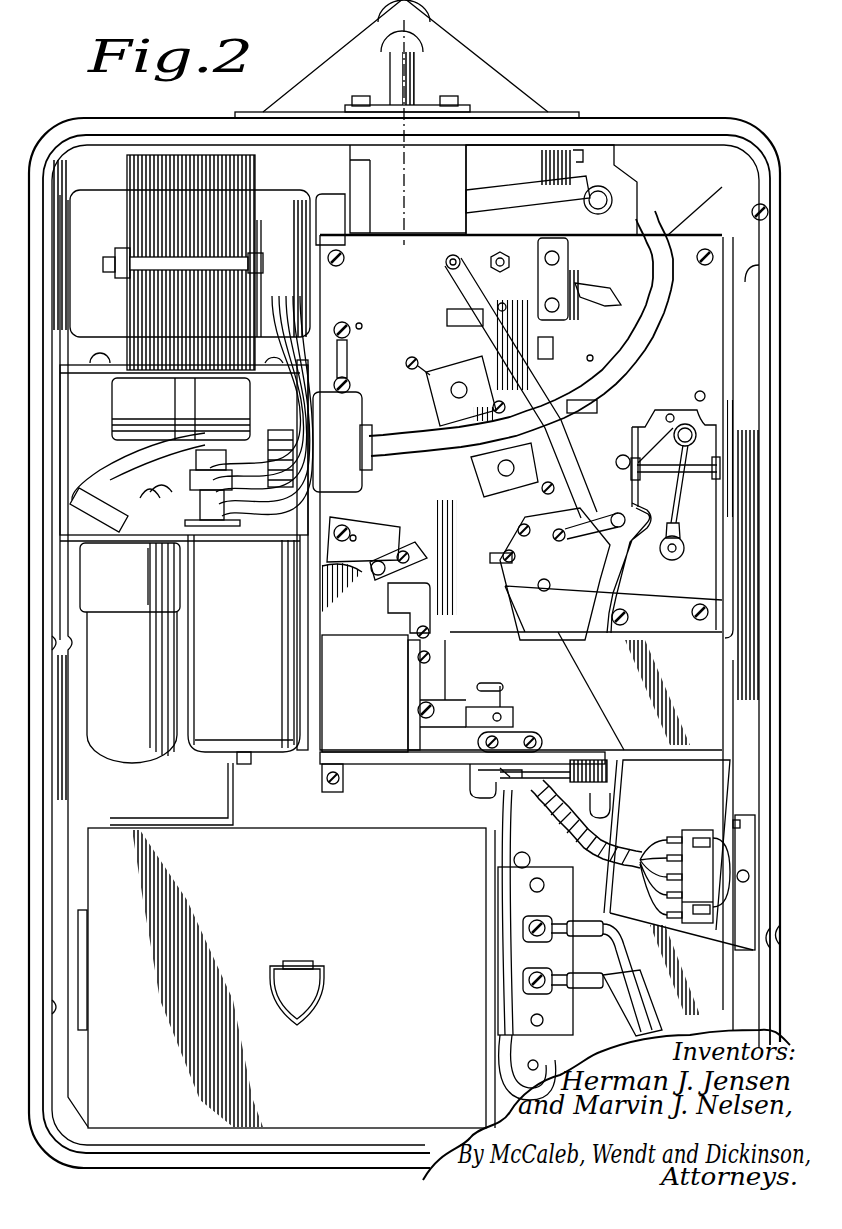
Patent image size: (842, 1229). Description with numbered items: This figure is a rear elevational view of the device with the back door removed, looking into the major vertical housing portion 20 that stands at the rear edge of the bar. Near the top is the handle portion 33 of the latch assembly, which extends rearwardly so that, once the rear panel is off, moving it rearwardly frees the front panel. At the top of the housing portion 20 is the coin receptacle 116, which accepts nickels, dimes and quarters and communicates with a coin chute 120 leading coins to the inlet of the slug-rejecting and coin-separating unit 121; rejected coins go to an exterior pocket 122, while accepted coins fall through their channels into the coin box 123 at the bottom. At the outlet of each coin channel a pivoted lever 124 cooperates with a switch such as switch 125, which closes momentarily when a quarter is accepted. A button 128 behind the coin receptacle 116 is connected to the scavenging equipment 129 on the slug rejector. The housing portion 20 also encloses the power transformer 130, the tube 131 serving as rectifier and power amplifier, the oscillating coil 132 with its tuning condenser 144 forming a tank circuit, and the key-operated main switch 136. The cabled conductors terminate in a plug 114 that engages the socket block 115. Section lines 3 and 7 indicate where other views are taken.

The section line 3- 3 is at (420, 34).
The section line 7- 7 is at (307, 803).
The major vertical housing portion 20 is at (767, 503).
The handle portion 33 is at (322, 203).
The plug 114 is at (358, 409).
The socket block 115 is at (291, 502).
The coin receptacle 116 is at (450, 47).
The coin chute 120 is at (532, 165).
The slug-rejecting and coin-separating unit 121 is at (652, 403).
The exterior pocket 122 is at (791, 953).
The coin box 123 is at (308, 937).
The pivoted lever 124 is at (426, 759).
The switch 125 is at (522, 780).
The button 128 is at (431, 73).
The scavenging equipment 129 is at (699, 581).
The power transformer 130 is at (167, 176).
The tube 131 is at (112, 740).
The oscillating coil 132 is at (198, 457).
The main switch 136 is at (697, 838).
The tuning condenser 144 is at (230, 718).